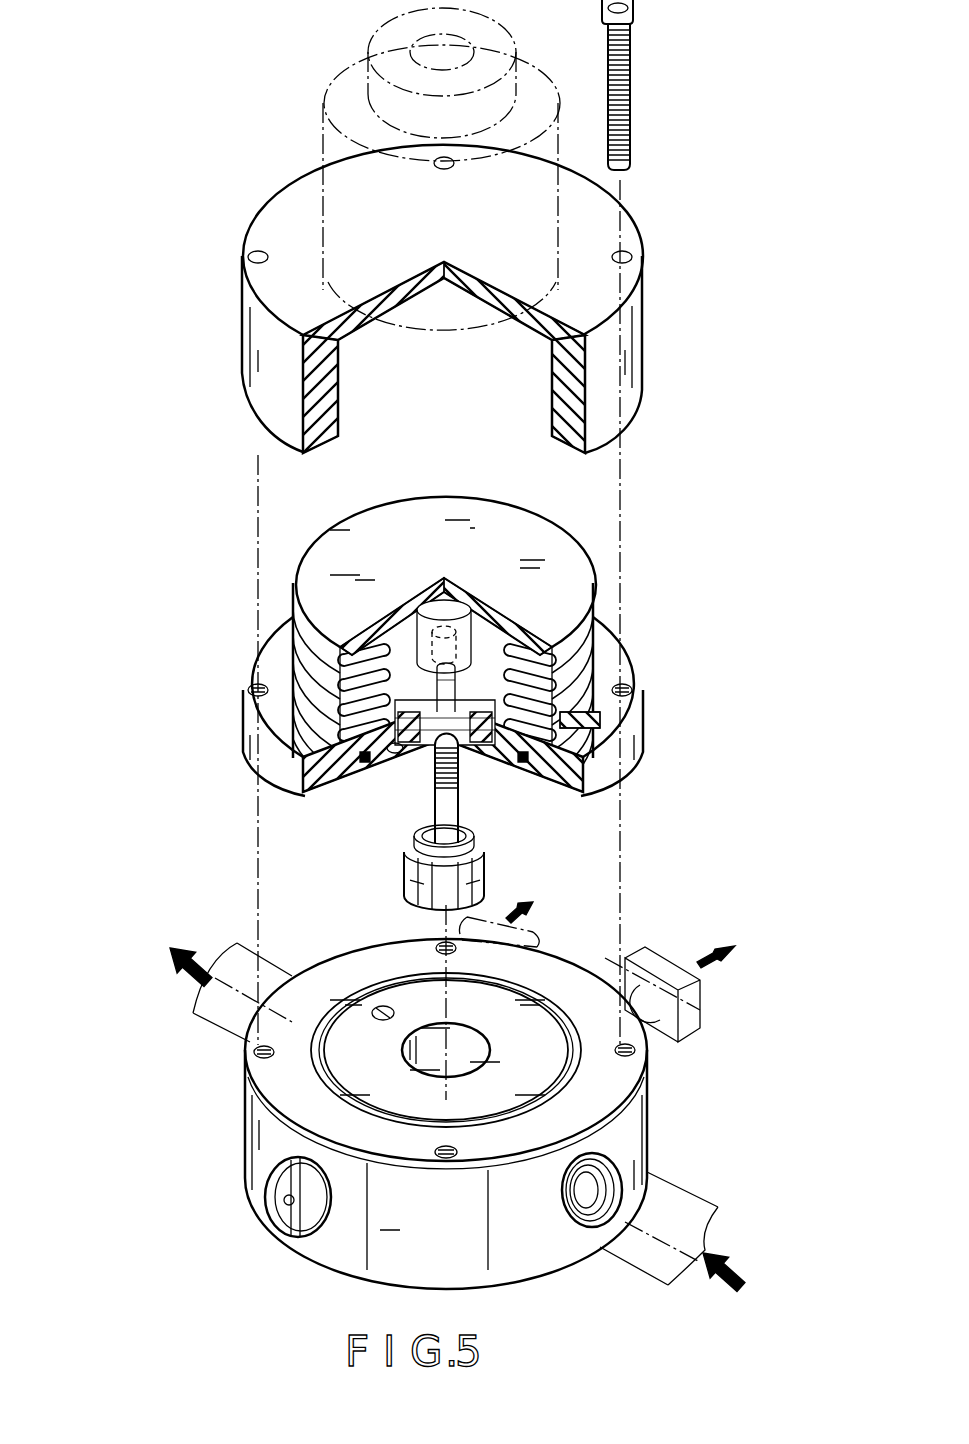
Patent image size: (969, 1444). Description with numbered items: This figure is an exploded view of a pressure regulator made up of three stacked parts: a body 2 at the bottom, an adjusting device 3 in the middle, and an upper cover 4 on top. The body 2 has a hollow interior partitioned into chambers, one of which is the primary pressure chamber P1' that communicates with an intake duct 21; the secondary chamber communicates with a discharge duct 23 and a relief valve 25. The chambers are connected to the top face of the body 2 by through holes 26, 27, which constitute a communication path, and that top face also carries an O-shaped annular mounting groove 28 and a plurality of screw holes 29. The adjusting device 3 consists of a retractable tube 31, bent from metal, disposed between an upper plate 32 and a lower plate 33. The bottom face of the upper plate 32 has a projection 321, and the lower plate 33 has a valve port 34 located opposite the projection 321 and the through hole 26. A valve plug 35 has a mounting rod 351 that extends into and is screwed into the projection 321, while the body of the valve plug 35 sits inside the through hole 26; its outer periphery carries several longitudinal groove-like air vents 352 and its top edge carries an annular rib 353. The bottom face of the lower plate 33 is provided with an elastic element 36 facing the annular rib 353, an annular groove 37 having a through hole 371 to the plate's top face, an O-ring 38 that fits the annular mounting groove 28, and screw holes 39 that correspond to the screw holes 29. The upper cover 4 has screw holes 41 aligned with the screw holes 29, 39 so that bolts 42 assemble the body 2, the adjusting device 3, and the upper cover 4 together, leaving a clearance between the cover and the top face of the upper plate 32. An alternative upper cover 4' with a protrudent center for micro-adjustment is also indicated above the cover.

The body 2 is at (150, 878).
The intake duct 21 is at (670, 1207).
The discharge duct 23 is at (236, 1000).
The relief valve 25 is at (292, 1210).
The through hole 26 is at (462, 1043).
The through hole 27 is at (378, 1008).
The annular mounting groove 28 is at (402, 983).
The screw holes 29 is at (627, 1045).
The adjusting device 3 is at (150, 525).
The retractable tube 31 is at (372, 648).
The upper plate 32 is at (473, 513).
The projection 321 is at (466, 633).
The lower plate 33 is at (620, 714).
The valve port 34 is at (600, 732).
The valve plug 35 is at (553, 782).
The mounting rod 351 is at (448, 810).
The air vents 352 is at (483, 878).
The annular rib 353 is at (466, 838).
The elastic element 36 is at (412, 742).
The annular groove 37 is at (397, 745).
The through hole 371 is at (387, 740).
The O-ring 38 is at (385, 750).
The screw holes 39 is at (625, 690).
The upper cover 4 is at (402, 305).
The upper cover 4' is at (409, 149).
The screw holes 41 is at (625, 256).
The bolts 42 is at (617, 105).
The primary pressure chamber P1' is at (592, 1241).